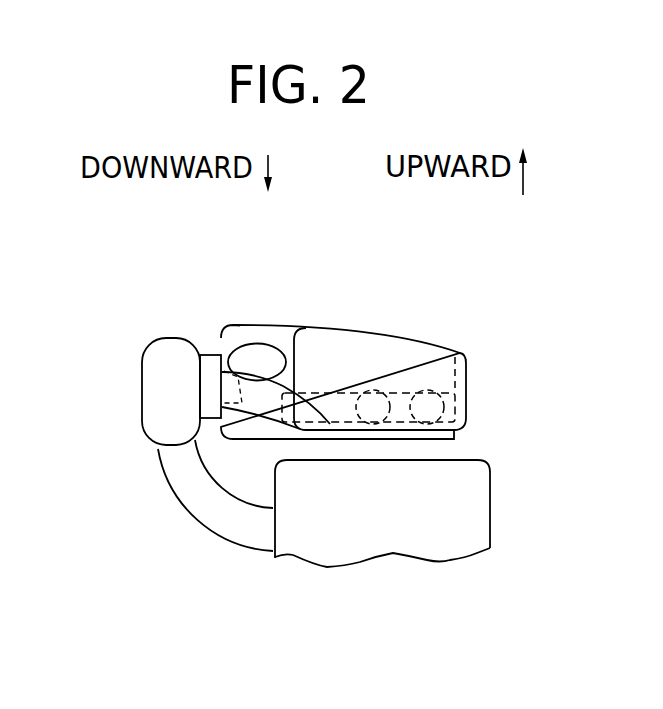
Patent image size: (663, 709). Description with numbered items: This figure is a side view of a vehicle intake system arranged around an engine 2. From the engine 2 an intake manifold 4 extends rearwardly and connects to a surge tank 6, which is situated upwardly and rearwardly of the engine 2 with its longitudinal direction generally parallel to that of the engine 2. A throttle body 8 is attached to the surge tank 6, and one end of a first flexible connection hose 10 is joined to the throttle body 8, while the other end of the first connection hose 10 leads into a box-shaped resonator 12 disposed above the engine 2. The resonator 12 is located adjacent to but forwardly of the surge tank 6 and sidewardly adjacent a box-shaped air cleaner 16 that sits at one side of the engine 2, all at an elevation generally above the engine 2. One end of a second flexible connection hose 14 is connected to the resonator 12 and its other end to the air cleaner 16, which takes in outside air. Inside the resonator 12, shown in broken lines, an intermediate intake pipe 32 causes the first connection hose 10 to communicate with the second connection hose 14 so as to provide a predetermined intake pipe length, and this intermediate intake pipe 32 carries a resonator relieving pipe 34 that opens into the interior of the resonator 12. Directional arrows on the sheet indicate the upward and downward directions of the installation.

The engine 2 is at (363, 555).
The intake manifold 4 is at (232, 552).
The surge tank 6 is at (178, 339).
The throttle body 8 is at (209, 353).
The first flexible connection hose 10 is at (262, 400).
The resonator 12 is at (456, 340).
The second flexible connection hose 14 is at (288, 376).
The air cleaner 16 is at (265, 316).
The intermediate intake pipe 32 is at (333, 392).
The resonator relieving pipe 34 is at (423, 391).